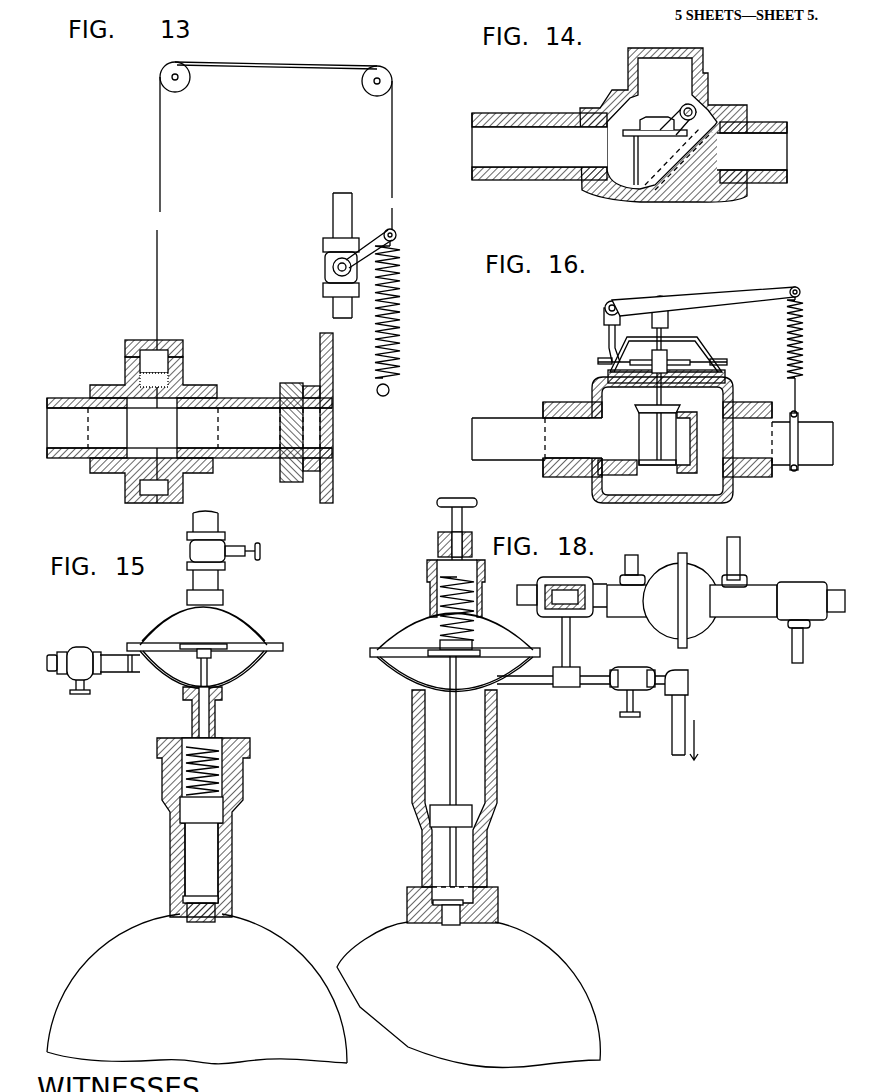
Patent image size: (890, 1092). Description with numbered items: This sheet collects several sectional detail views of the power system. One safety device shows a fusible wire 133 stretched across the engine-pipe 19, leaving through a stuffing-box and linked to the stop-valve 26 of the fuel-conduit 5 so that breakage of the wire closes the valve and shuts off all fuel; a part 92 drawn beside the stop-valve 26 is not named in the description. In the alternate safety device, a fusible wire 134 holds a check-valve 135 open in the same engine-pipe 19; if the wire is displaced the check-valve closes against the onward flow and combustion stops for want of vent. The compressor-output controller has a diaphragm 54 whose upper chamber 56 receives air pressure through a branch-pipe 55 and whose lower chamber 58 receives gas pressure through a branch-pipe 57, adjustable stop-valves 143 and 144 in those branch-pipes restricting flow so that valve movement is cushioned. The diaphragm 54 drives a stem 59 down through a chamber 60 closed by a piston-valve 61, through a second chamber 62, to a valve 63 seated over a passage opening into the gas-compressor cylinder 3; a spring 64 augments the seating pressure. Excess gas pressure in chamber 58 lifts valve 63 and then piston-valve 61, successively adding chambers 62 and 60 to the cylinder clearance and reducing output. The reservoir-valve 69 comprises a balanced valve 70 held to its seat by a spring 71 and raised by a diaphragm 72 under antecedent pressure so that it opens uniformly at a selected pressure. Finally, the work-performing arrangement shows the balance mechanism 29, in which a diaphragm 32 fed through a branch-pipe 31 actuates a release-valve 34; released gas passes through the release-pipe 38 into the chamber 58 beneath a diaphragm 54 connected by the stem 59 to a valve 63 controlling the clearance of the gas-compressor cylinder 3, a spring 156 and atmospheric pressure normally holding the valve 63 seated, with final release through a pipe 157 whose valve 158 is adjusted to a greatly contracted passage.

In FIG. 15, the auxiliary compressor 3 is at (197, 989).
In FIG. 18, the auxiliary compressor 3 is at (385, 948).
In FIG. 13, the conduit 5 is at (335, 210).
In FIG. 13, the engine-pipe 19 is at (230, 398).
In FIG. 14, the engine-pipe 19 is at (533, 113).
In FIG. 13, the stop-valve 26 is at (325, 266).
In FIG. 18, the balance mechanism 29 is at (688, 643).
In FIG. 18, the branch-pipe 31 is at (622, 562).
In FIG. 18, the diaphragm 32 is at (690, 573).
In FIG. 18, the release-valve 34 is at (548, 580).
In FIG. 18, the release-pipe 38 is at (571, 644).
In FIG. 15, the diaphragm 54 is at (240, 647).
In FIG. 18, the diaphragm 54 is at (410, 642).
In FIG. 15, the branch-pipe 55 is at (220, 522).
In FIG. 15, the chamber 56 is at (233, 622).
In FIG. 15, the branch-pipe 57 is at (118, 660).
In FIG. 15, the chamber 58 is at (233, 668).
In FIG. 18, the chamber 58 is at (415, 660).
In FIG. 15, the stem 59 is at (200, 718).
In FIG. 18, the stem 59 is at (450, 750).
In FIG. 15, the chamber 60 is at (250, 758).
In FIG. 15, the piston-valve 61 is at (218, 808).
In FIG. 15, the second chamber 62 is at (216, 857).
In FIG. 15, the valve 63 is at (222, 897).
In FIG. 18, the valve 63 is at (432, 898).
In FIG. 15, the spring 64 is at (222, 773).
In FIG. 16, the reservoir-valve 69 is at (657, 450).
In FIG. 16, the balanced valve 70 is at (662, 472).
In FIG. 16, the spring 71 is at (787, 342).
In FIG. 16, the diaphragm 72 is at (620, 372).
In FIG. 13, the spring 92 is at (400, 296).
In FIG. 13, the fusible wire 133 is at (152, 423).
In FIG. 14, the fusible wire 134 is at (634, 154).
In FIG. 14, the check-valve 135 is at (646, 128).
In FIG. 15, the stop-valve 143 is at (222, 553).
In FIG. 15, the stop-valve 144 is at (76, 650).
In FIG. 18, the spring 156 is at (437, 592).
In FIG. 18, the pipe 157 is at (686, 724).
In FIG. 18, the valve 158 is at (622, 688).